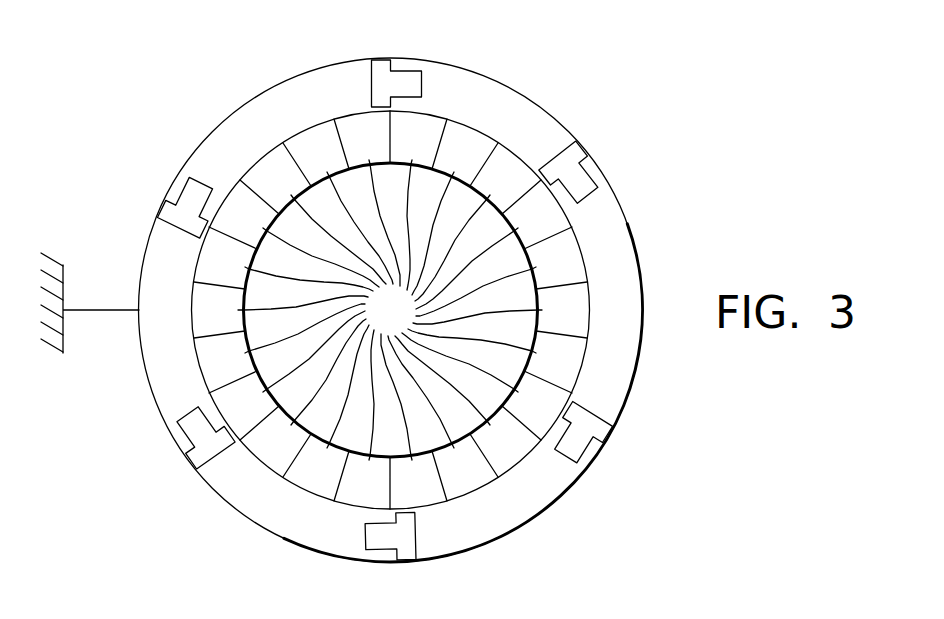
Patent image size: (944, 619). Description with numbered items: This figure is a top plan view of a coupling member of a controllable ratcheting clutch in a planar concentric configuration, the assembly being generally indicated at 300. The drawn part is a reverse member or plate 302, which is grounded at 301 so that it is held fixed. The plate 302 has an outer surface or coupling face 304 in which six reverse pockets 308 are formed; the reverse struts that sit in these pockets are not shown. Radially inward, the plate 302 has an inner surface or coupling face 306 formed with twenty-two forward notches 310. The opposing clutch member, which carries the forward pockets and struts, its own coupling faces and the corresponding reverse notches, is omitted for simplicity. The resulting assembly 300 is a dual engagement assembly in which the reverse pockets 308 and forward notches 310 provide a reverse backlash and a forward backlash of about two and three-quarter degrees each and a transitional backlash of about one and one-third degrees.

The assembly 300 is at (510, 86).
The ground 301 is at (45, 257).
The reverse member or plate 302 is at (452, 94).
The outer surface or coupling face 304 is at (549, 121).
The inner surface or coupling face 306 is at (573, 258).
The reverse pockets 308 is at (384, 61).
The forward notches 310 is at (390, 310).